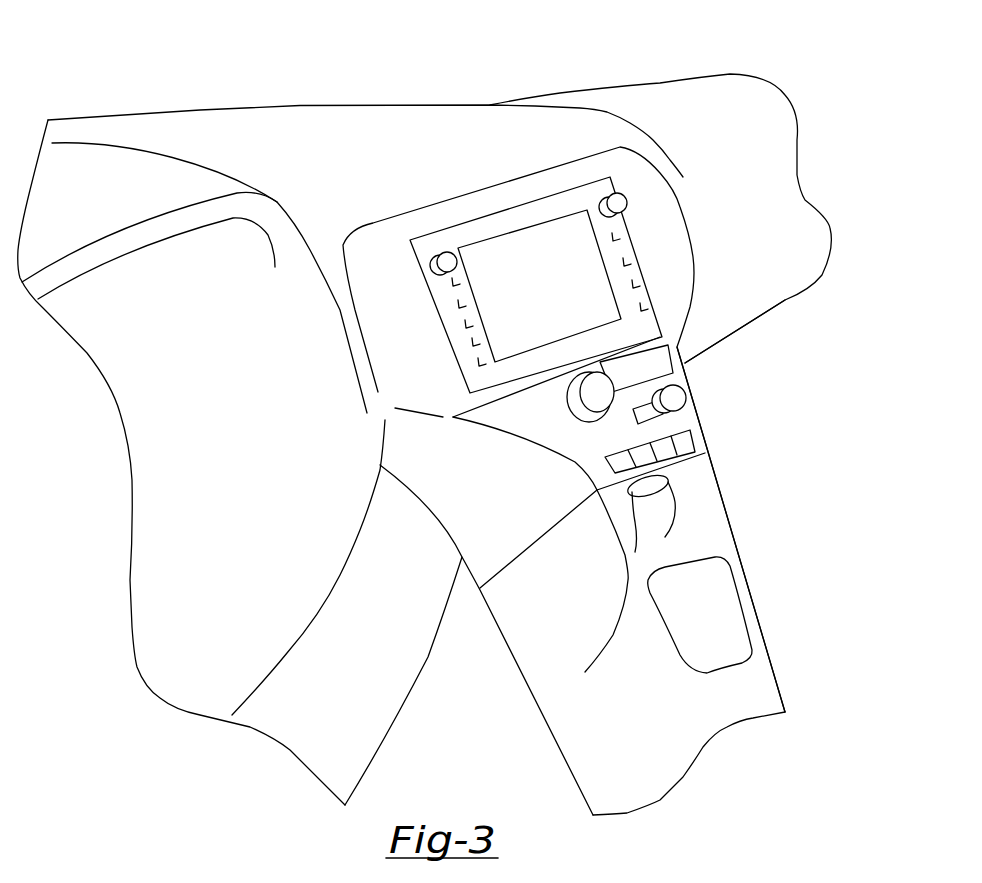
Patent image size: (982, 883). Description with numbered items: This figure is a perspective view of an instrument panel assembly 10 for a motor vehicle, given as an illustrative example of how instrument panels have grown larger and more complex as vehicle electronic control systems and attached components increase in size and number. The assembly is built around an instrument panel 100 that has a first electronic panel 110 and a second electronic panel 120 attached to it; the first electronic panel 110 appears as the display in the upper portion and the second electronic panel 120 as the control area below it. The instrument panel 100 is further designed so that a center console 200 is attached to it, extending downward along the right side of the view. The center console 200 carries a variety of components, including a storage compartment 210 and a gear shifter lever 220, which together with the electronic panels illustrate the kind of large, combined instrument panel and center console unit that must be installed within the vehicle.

The instrument panel assembly 10 is at (570, 98).
The instrument panel 100 is at (303, 140).
The first electronic panel 110 is at (532, 290).
The second electronic panel 120 is at (667, 423).
The center console 200 is at (756, 628).
The storage compartment 210 is at (713, 620).
The gear shifter lever 220 is at (650, 502).